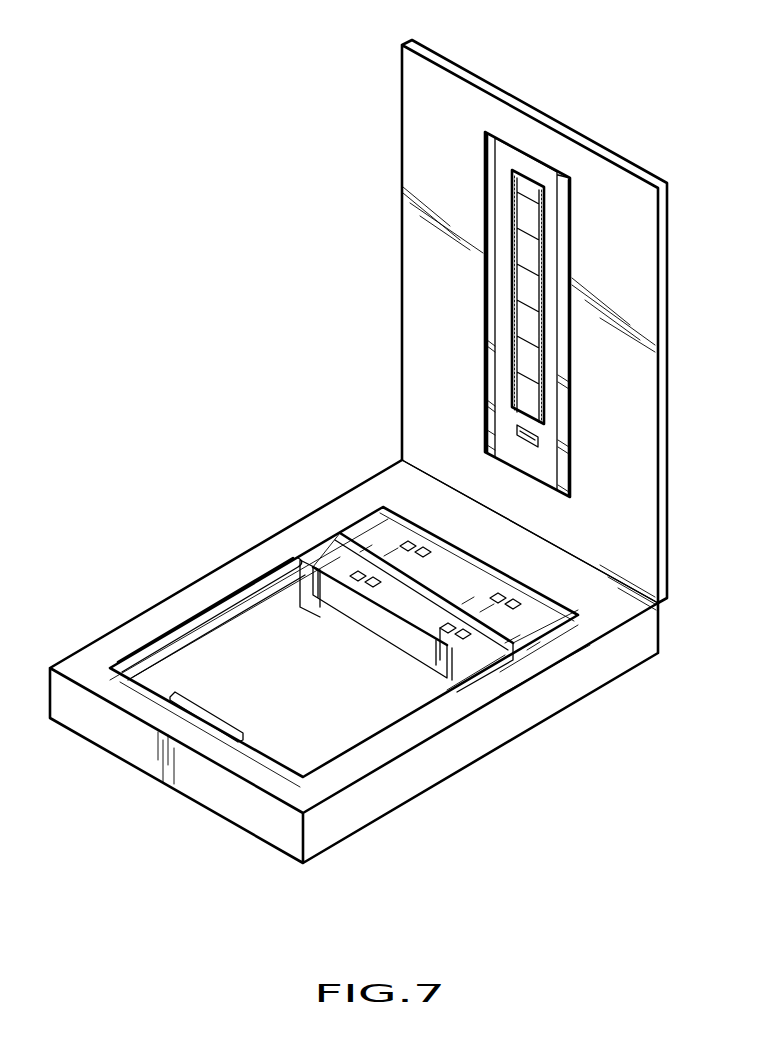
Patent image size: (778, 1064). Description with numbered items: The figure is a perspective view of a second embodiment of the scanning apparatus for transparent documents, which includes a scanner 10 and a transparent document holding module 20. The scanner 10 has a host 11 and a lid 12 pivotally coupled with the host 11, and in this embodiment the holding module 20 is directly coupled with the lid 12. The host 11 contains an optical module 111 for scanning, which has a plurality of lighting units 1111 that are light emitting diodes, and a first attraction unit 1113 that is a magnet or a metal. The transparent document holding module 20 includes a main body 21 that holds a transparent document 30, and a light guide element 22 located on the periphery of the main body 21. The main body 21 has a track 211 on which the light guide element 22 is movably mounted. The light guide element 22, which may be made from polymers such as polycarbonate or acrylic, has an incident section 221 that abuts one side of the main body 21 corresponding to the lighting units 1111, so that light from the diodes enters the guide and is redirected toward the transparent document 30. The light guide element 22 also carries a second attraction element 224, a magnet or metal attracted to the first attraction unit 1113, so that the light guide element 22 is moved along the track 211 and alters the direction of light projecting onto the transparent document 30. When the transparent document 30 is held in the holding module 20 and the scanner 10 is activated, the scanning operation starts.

The scanner 10 is at (407, 463).
The host 11 is at (359, 653).
The lid 12 is at (425, 110).
The optical module 111 is at (350, 615).
The lighting units 1111 is at (457, 622).
The first attraction unit 1113 is at (443, 630).
The transparent document holding module 20 is at (438, 359).
The main body 21 is at (517, 455).
The track 211 is at (562, 238).
The light guide element 22 is at (600, 395).
The incident section 221 is at (563, 418).
The second attraction element 224 is at (565, 450).
The transparent document 30 is at (530, 213).